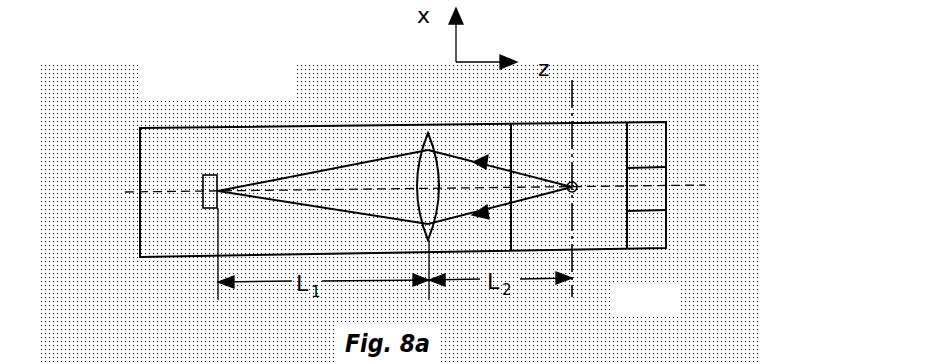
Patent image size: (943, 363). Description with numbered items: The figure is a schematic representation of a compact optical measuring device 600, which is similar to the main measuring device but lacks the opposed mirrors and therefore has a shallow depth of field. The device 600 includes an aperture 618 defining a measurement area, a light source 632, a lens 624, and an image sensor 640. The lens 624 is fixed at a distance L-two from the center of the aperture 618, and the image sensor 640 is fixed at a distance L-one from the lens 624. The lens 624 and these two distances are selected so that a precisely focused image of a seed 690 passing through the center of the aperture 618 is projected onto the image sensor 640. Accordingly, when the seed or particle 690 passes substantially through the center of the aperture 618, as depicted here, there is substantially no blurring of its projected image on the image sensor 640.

The compact optical measuring device 600 is at (758, 107).
The aperture 618 is at (587, 132).
The lens 624 is at (420, 152).
The light source 632 is at (650, 187).
The image sensor 640 is at (203, 175).
The seed 690 is at (575, 192).